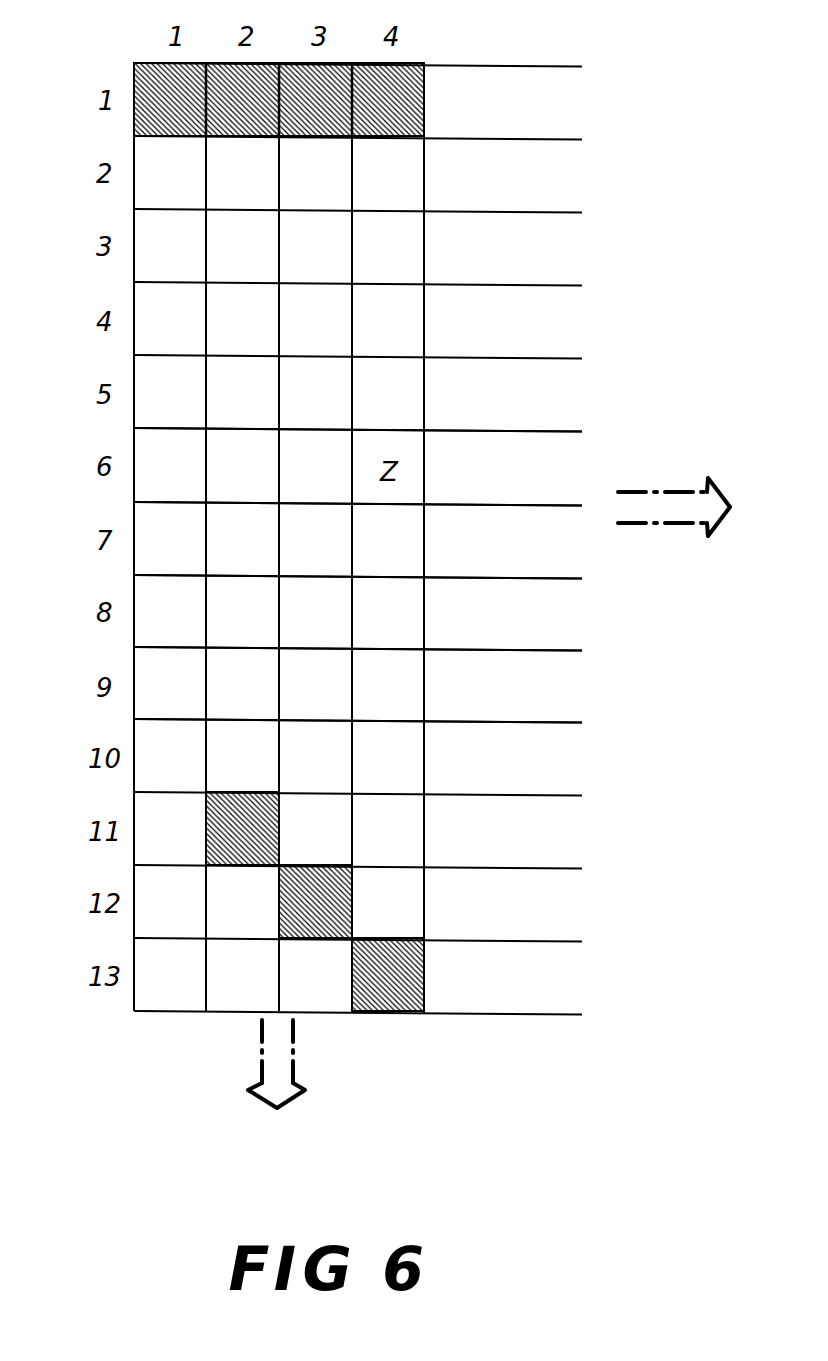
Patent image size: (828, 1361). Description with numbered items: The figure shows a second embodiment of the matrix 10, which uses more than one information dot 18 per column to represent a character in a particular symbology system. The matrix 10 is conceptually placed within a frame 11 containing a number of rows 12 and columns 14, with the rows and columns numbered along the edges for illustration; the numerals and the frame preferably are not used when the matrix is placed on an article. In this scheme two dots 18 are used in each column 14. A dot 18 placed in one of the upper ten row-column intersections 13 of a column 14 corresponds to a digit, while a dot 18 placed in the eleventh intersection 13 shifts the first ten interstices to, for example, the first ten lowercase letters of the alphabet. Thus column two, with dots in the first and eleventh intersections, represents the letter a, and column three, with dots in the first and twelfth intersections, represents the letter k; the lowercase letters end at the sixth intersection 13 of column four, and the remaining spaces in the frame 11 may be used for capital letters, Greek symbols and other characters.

The information dot 18 is at (162, 108).
The intersection 13 is at (134, 307).
The matrix 10 is at (129, 442).
The frame 11 is at (132, 573).
The row 12 is at (100, 646).
The column 14 is at (423, 1020).